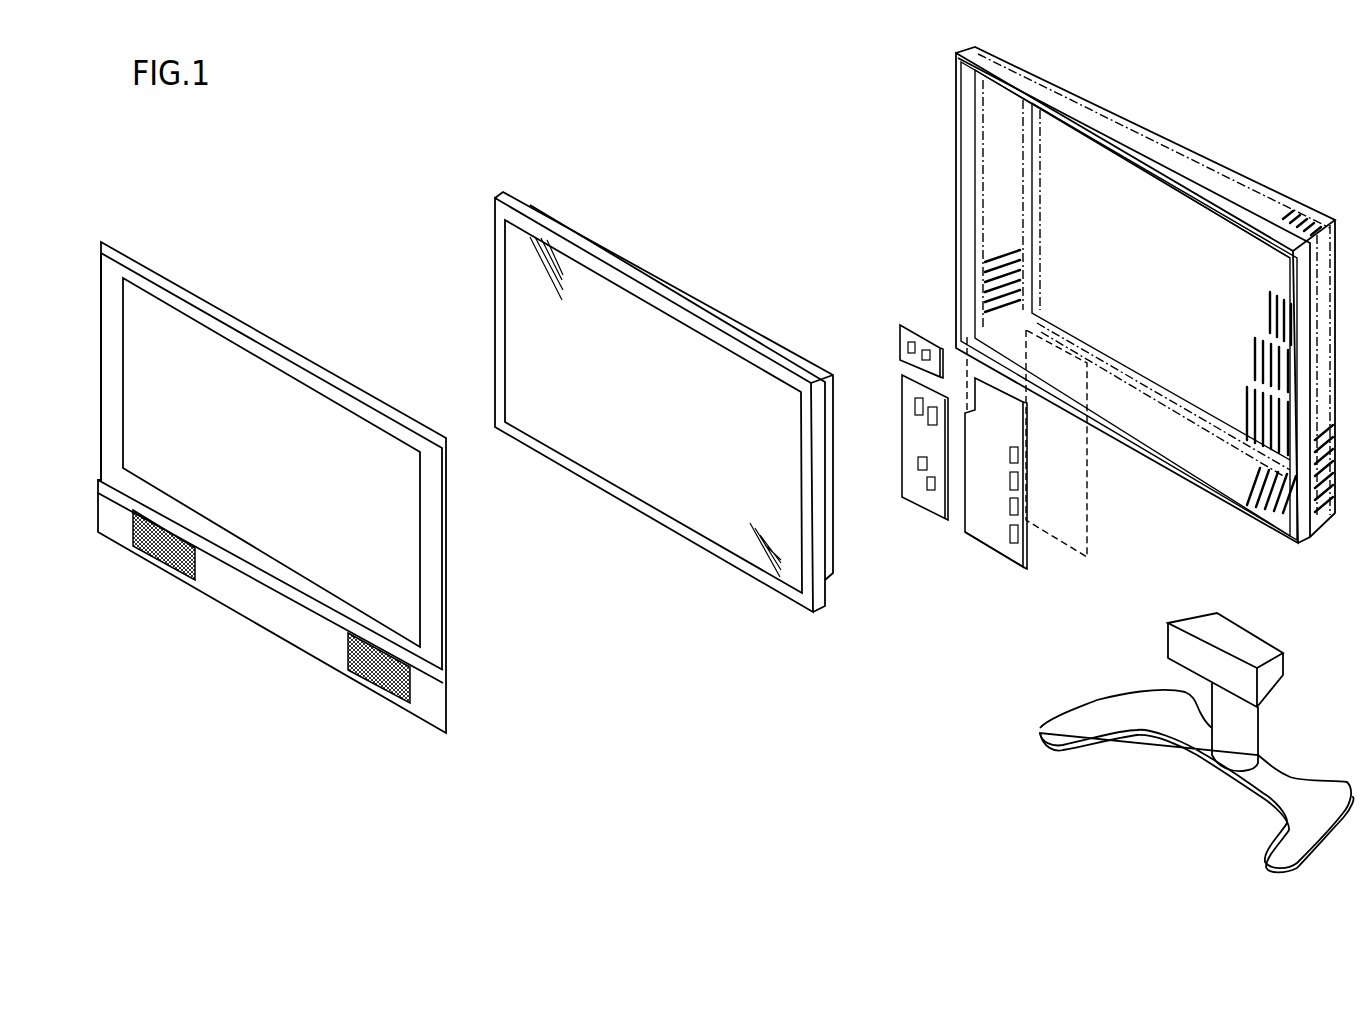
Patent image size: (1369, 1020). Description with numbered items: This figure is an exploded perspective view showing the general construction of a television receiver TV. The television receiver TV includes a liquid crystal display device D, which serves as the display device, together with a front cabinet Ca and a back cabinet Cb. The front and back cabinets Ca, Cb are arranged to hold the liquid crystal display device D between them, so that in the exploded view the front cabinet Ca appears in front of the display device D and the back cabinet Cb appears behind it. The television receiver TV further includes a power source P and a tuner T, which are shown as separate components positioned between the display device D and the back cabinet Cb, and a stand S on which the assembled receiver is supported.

The television receiver TV is at (688, 132).
The front cabinet Ca is at (257, 325).
The liquid crystal display device D is at (605, 243).
The back cabinet Cb is at (1138, 126).
The tuner T is at (917, 507).
The power source P is at (987, 545).
The stand S is at (1102, 733).